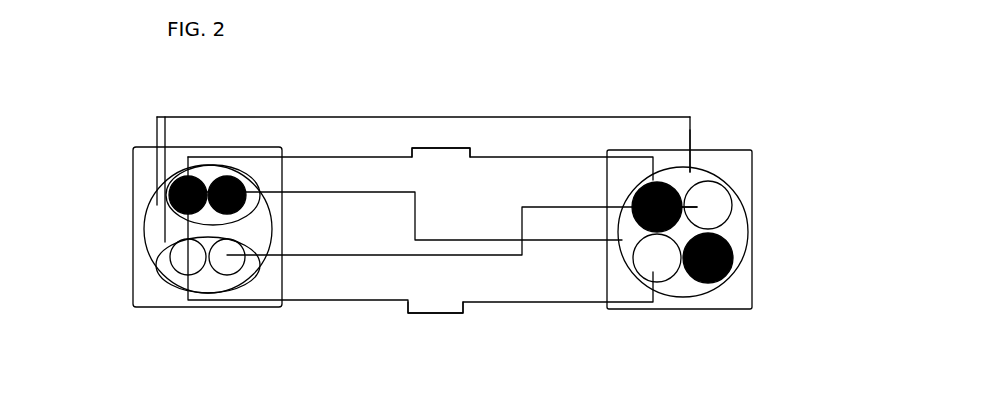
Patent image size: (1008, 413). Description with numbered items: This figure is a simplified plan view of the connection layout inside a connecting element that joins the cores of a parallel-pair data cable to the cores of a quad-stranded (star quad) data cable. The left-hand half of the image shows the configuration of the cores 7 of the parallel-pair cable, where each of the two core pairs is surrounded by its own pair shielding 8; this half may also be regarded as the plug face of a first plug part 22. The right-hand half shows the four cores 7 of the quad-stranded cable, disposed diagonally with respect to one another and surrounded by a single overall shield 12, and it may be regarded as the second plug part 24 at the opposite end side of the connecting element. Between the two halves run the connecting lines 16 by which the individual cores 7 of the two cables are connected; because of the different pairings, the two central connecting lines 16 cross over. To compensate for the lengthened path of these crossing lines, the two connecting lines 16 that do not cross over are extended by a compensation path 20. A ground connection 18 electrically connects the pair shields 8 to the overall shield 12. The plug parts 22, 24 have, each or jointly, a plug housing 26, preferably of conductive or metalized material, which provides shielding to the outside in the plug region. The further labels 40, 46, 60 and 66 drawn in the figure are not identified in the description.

The cores 7 is at (227, 262).
The pair shielding 8 is at (165, 242).
The overall shield 12 is at (712, 172).
The connecting lines 16 is at (343, 157).
The ground connection 18 is at (497, 117).
The compensation path 20 is at (442, 147).
The first plug part 22 is at (160, 308).
The second plug part 24 is at (717, 309).
The plug housing 26 is at (185, 143).
The conductor pair 40 is at (163, 183).
The conductor pair 46 is at (187, 257).
The conductor 60 is at (730, 273).
The conductor 66 is at (718, 208).